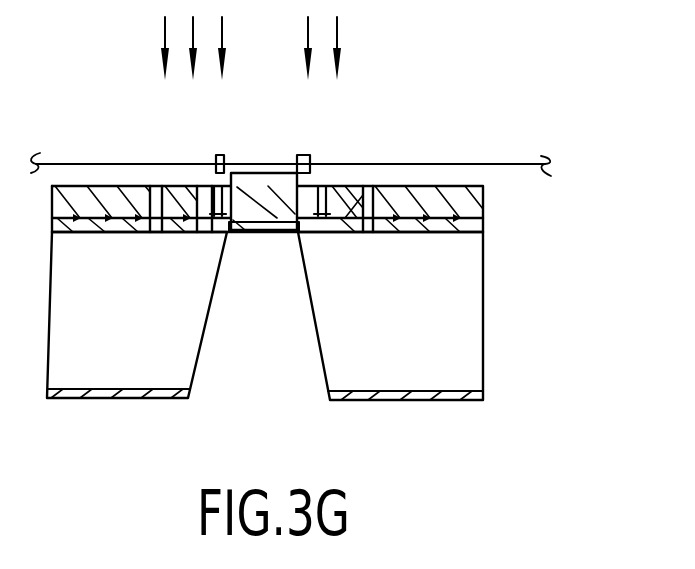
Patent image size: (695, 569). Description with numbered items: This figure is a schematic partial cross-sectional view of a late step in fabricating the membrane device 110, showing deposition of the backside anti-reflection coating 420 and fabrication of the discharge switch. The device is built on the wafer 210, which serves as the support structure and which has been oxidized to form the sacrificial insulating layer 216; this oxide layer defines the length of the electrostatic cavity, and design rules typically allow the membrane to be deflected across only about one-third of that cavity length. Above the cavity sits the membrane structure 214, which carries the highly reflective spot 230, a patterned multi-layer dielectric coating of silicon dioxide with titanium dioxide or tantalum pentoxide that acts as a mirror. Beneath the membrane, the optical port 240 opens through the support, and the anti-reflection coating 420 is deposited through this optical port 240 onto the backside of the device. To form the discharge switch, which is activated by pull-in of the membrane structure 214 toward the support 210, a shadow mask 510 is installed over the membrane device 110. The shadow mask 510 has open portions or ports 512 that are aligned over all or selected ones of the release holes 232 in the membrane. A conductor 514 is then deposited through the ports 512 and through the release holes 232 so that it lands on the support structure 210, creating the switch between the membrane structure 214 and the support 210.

The membrane device 110 is at (569, 213).
The wafer 210 is at (483, 374).
The membrane structure 214 is at (248, 158).
The sacrificial insulating layer 216 is at (427, 233).
The highly reflective spot 230 is at (299, 157).
The release holes 232 is at (332, 214).
The optical port 240 is at (198, 355).
The backside anti-reflection coating 420 is at (267, 232).
The shadow mask 510 is at (506, 165).
The ports 512 is at (219, 156).
The conductor 514 is at (341, 33).